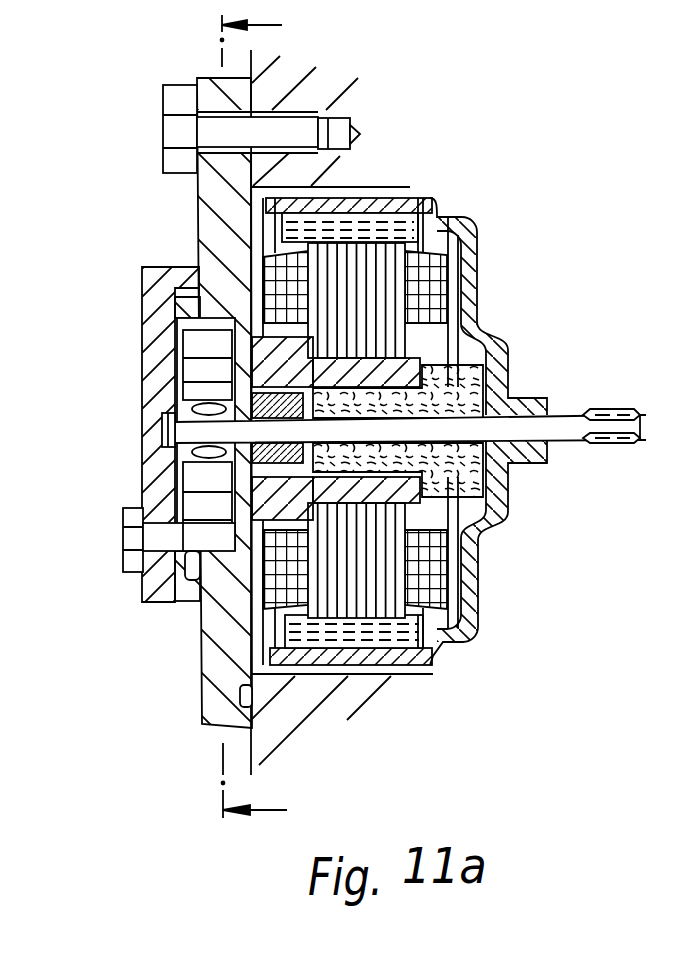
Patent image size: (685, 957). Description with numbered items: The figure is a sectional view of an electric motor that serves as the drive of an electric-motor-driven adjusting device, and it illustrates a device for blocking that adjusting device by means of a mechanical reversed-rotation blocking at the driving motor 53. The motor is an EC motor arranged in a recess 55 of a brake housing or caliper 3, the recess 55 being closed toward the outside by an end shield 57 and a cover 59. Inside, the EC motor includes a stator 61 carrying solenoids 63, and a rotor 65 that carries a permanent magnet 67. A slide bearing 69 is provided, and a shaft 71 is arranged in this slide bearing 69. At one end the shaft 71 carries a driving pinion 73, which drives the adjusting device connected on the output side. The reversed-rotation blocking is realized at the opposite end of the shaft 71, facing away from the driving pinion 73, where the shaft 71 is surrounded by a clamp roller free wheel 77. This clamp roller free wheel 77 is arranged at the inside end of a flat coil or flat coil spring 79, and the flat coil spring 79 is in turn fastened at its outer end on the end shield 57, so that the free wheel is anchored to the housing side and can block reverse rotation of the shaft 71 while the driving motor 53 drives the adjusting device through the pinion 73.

The brake housing or caliper 3 is at (355, 168).
The driving motor 53 is at (445, 436).
The recess 55 is at (378, 196).
The end shield 57 is at (217, 202).
The cover 59 is at (142, 350).
The stator 61 is at (370, 318).
The solenoids 63 is at (448, 218).
The rotor 65 is at (480, 620).
The permanent magnet 67 is at (393, 636).
The slide bearing 69 is at (464, 497).
The shaft 71 is at (545, 427).
The driving pinion 73 is at (614, 444).
The clamp roller free wheel 77 is at (190, 405).
The flat coil spring 79 is at (196, 578).